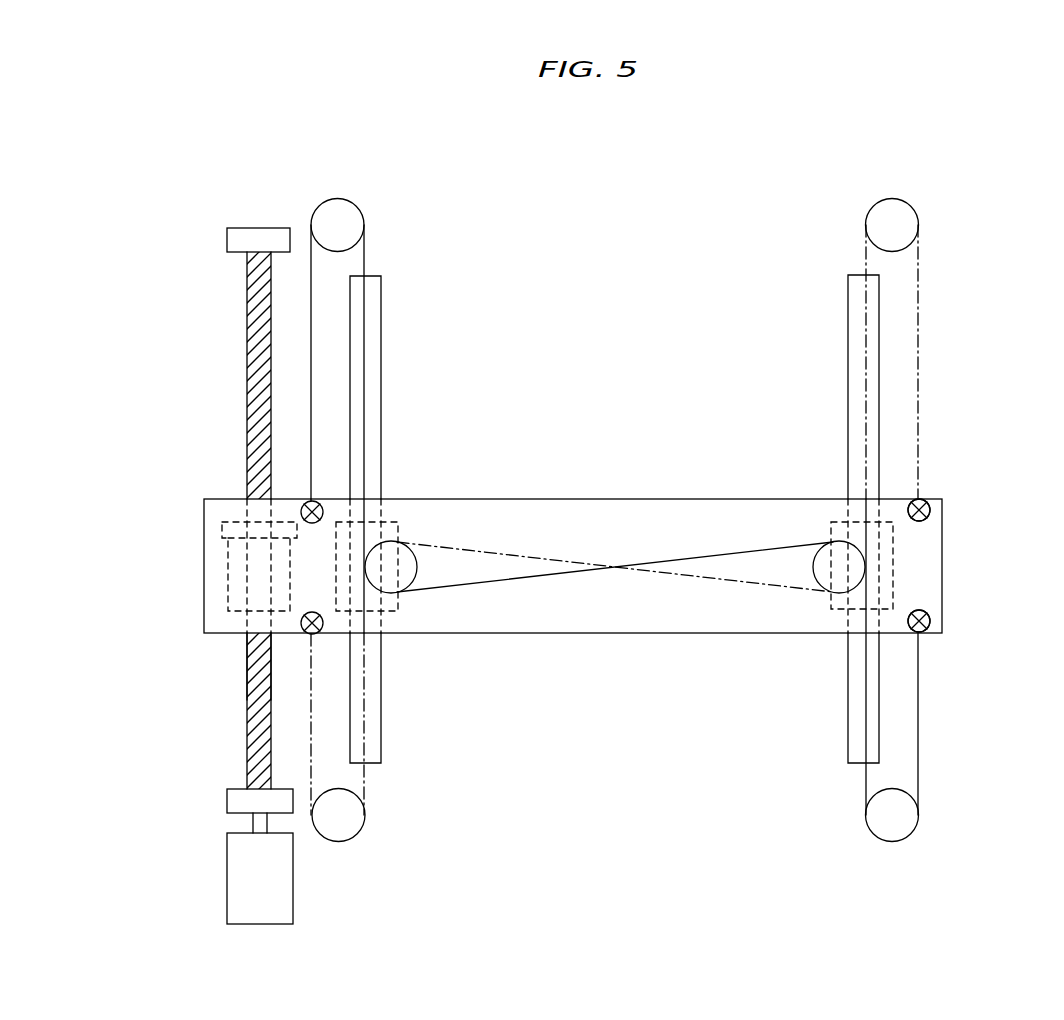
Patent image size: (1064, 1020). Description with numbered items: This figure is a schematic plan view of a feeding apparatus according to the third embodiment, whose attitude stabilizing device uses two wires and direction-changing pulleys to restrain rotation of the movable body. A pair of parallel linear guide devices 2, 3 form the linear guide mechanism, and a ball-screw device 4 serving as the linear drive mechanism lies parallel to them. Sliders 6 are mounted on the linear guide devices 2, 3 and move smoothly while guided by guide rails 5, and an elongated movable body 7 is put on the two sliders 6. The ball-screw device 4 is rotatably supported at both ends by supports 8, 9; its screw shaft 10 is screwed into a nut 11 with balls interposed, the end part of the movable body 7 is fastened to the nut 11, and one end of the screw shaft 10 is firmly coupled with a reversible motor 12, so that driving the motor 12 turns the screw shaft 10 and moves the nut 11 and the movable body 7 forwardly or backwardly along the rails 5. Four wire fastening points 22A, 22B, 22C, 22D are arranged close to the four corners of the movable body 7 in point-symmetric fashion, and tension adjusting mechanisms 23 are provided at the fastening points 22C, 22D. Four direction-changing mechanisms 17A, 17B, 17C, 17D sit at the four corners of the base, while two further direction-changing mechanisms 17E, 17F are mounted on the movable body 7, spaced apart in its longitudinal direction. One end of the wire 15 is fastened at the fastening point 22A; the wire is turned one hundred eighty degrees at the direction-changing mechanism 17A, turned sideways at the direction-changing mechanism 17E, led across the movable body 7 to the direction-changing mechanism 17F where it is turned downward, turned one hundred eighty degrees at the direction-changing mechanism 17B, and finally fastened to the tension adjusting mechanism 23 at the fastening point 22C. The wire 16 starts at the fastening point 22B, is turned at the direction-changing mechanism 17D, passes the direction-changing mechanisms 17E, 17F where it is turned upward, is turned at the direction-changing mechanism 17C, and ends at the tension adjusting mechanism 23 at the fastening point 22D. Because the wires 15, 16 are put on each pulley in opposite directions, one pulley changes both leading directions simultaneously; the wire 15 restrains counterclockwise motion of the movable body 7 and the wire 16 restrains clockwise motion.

The linear guide device 2 is at (382, 418).
The linear guide device 3 is at (847, 413).
The ball-screw device 4 is at (247, 645).
The guide rail 5 is at (382, 322).
The slider 6 is at (393, 502).
The movable body 7 is at (597, 615).
The support 8 is at (232, 240).
The support 9 is at (237, 802).
The screw shaft 10 is at (258, 352).
The nut 11 is at (242, 570).
The reversible motor 12 is at (232, 885).
The wire 15 is at (366, 250).
The wire 16 is at (866, 262).
The direction-changing mechanism 17A is at (348, 212).
The direction-changing mechanism 17B is at (900, 822).
The direction-changing mechanism 17C is at (905, 232).
The direction-changing mechanism 17D is at (347, 822).
The direction-changing mechanism 17E is at (405, 573).
The direction-changing mechanism 17F is at (826, 575).
The wire fastening point 22A is at (309, 501).
The wire fastening point 22B is at (310, 636).
The wire fastening point 22C is at (922, 633).
The wire fastening point 22D is at (922, 500).
The tension adjusting mechanism 23 is at (930, 508).